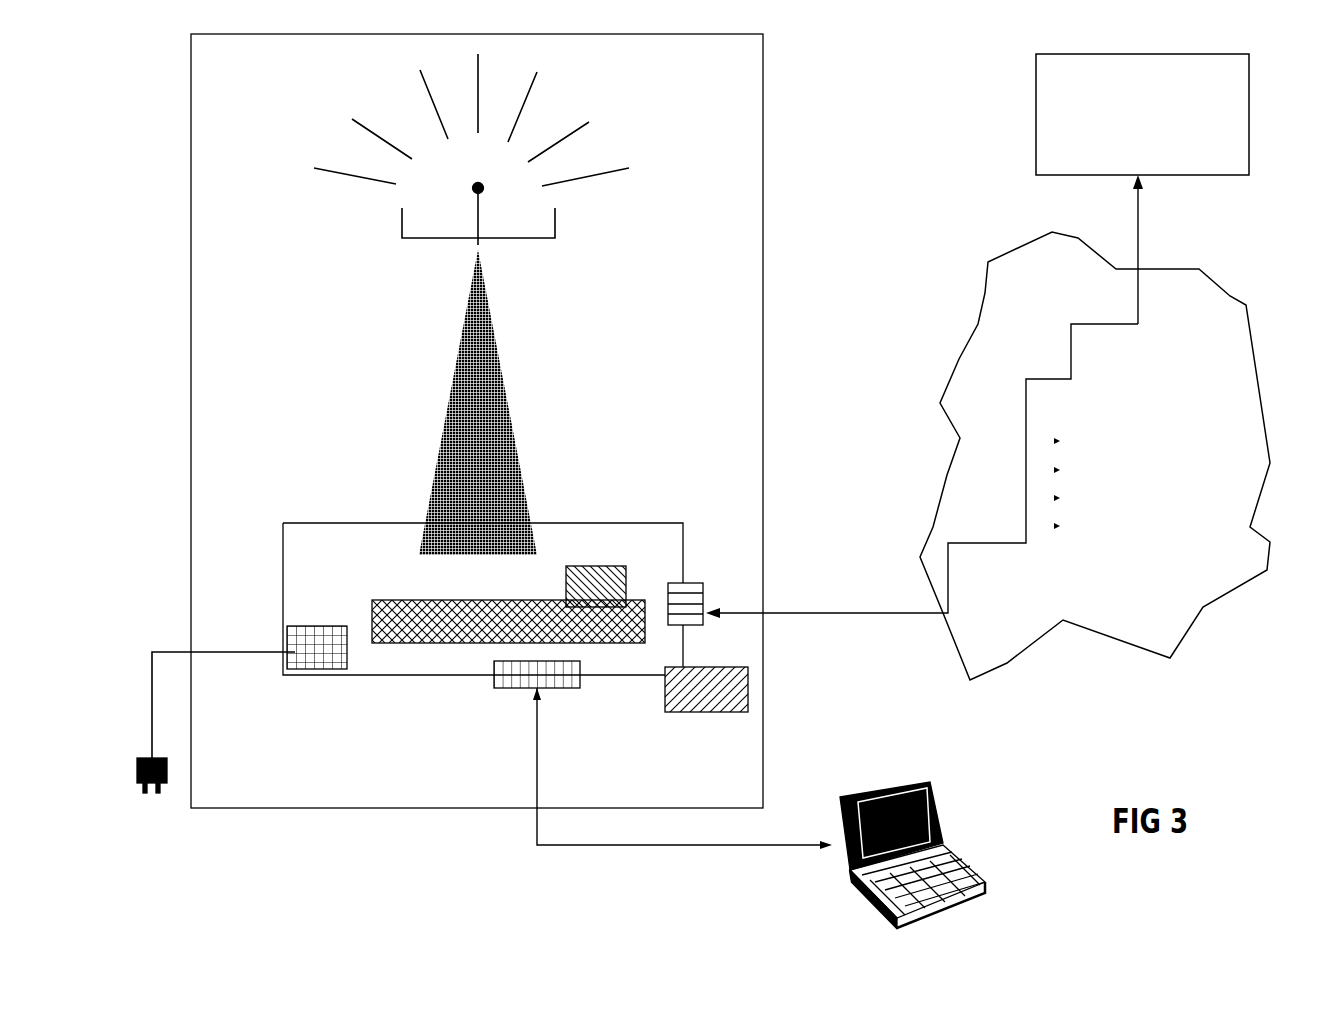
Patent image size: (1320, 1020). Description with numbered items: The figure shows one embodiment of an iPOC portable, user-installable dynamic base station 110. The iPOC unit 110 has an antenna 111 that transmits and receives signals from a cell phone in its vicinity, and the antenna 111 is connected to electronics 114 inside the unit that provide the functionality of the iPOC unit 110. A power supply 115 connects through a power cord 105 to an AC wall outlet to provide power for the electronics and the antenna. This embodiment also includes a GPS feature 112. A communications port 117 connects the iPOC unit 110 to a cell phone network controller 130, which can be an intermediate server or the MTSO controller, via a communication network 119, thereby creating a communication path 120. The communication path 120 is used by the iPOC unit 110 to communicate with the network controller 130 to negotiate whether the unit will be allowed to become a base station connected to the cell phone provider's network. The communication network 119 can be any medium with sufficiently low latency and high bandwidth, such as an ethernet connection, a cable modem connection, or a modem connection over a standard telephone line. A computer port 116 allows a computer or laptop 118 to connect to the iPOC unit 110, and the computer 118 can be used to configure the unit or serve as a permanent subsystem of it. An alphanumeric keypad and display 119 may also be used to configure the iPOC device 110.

The power cord 105 is at (173, 642).
The iPOC base station 110 is at (309, 596).
The antenna 111 is at (444, 251).
The GPS feature 112 is at (608, 572).
The electronics 114 is at (455, 643).
The power supply 115 is at (318, 658).
The computer port 116 is at (552, 680).
The communications port 117 is at (700, 603).
The computer 118 is at (943, 798).
The communication network 119 is at (688, 697).
The communication path 120 is at (1017, 442).
The network controller 130 is at (1142, 189).